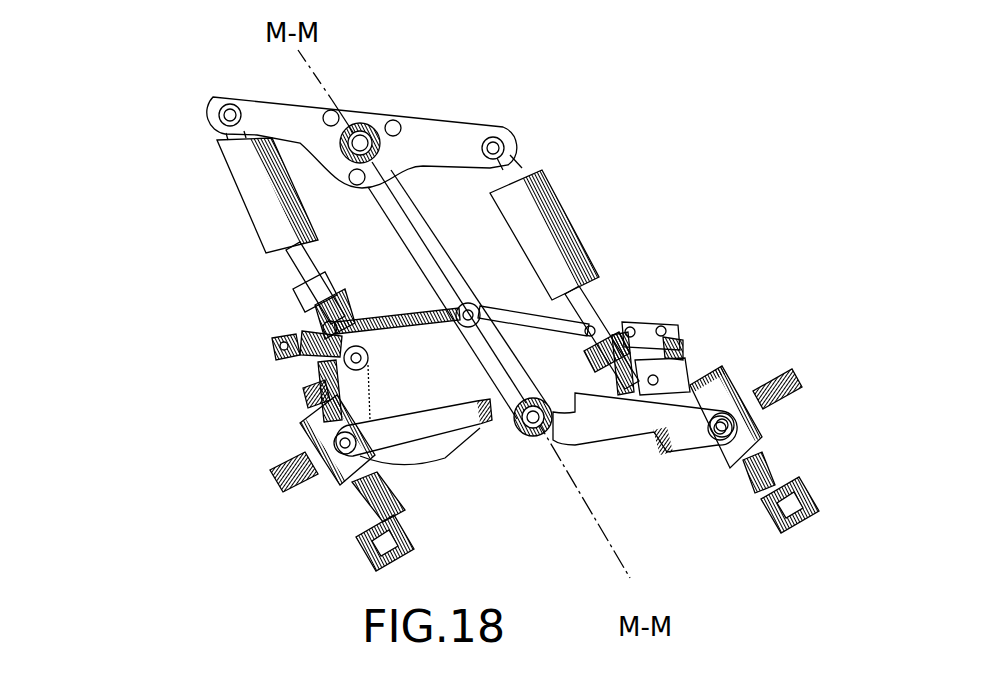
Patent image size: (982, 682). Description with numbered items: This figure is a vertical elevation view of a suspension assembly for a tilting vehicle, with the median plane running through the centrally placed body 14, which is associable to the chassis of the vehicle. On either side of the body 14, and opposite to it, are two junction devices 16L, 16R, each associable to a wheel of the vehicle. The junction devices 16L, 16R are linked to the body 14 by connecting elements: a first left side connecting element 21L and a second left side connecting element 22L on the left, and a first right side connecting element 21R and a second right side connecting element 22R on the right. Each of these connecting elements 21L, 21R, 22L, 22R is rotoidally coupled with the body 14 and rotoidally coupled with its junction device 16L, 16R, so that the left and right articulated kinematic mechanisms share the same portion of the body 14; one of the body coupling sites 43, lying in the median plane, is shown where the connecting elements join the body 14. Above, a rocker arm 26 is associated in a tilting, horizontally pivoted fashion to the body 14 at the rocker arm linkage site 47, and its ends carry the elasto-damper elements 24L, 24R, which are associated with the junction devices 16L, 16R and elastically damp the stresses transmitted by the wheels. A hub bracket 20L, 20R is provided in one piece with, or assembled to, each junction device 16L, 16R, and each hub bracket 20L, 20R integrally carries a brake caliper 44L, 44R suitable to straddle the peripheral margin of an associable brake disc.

The body 14 is at (423, 233).
The rocker arm 26 is at (447, 148).
The rocker arm linkage site 47 is at (375, 128).
The body coupling site 43 is at (520, 438).
The right side elasto-damper element 24R is at (247, 166).
The left side elasto-damper element 24L is at (562, 229).
The second right side connecting element 22R is at (312, 318).
The second left side connecting element 22L is at (560, 322).
The right side junction device 16R is at (305, 388).
The left side junction device 16L is at (693, 375).
The right hub bracket 20R is at (337, 495).
The left hub bracket 20L is at (768, 447).
The first right side connecting element 21R is at (450, 452).
The first left side connecting element 21L is at (607, 440).
The right brake caliper 44R is at (357, 545).
The left brake caliper 44L is at (813, 510).